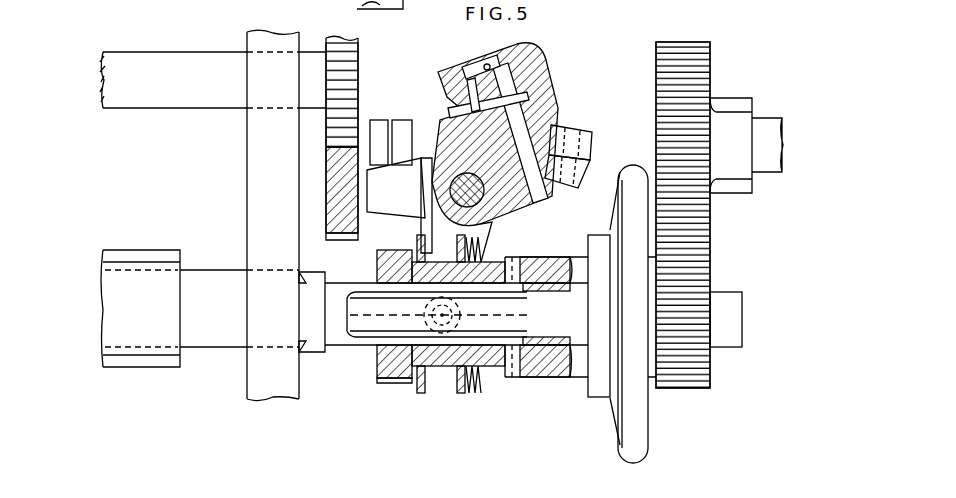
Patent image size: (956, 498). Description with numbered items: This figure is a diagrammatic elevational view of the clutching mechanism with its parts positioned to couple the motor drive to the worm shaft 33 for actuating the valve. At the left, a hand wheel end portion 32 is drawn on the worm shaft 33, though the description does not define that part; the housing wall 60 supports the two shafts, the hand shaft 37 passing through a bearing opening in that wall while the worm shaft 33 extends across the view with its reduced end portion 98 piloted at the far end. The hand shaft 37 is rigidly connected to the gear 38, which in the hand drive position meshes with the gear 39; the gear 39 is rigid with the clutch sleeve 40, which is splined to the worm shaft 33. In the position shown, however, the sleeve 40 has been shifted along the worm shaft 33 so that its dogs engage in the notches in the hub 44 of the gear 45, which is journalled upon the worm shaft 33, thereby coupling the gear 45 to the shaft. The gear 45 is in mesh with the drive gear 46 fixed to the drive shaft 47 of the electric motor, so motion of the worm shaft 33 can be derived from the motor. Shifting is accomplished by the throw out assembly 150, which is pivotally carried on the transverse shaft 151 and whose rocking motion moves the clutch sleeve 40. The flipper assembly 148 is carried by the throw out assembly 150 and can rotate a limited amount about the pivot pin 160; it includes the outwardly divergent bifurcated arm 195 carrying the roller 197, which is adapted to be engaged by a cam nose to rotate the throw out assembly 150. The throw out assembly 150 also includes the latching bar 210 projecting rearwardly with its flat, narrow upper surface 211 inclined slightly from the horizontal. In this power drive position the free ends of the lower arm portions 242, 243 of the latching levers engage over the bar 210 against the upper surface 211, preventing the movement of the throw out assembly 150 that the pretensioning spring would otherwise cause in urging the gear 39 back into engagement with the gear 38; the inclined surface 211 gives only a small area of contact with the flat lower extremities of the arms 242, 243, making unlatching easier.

The handle knob 32 is at (143, 247).
The worm shaft 33 is at (208, 292).
The shaft 37 is at (197, 97).
The gear 38 is at (346, 233).
The gear 39 is at (385, 378).
The clutch sleeve 40 is at (447, 366).
The hub 44 is at (547, 366).
The gear 45 is at (692, 293).
The drive gear 46 is at (697, 83).
The drive shaft 47 is at (765, 125).
The wall 60 is at (260, 171).
The reduced end portion 98 is at (728, 328).
The flipper assembly 148 is at (560, 66).
The throw out assembly 150 is at (511, 220).
The transverse shaft 151 is at (453, 205).
The pivot pin 160 is at (538, 203).
The bifurcated arm 195 is at (563, 130).
The roller 197 is at (588, 163).
The latching bar 210 is at (392, 202).
The upper surface 211 is at (415, 170).
The lower arm portion 242 is at (378, 120).
The lower arm portion 243 is at (400, 133).